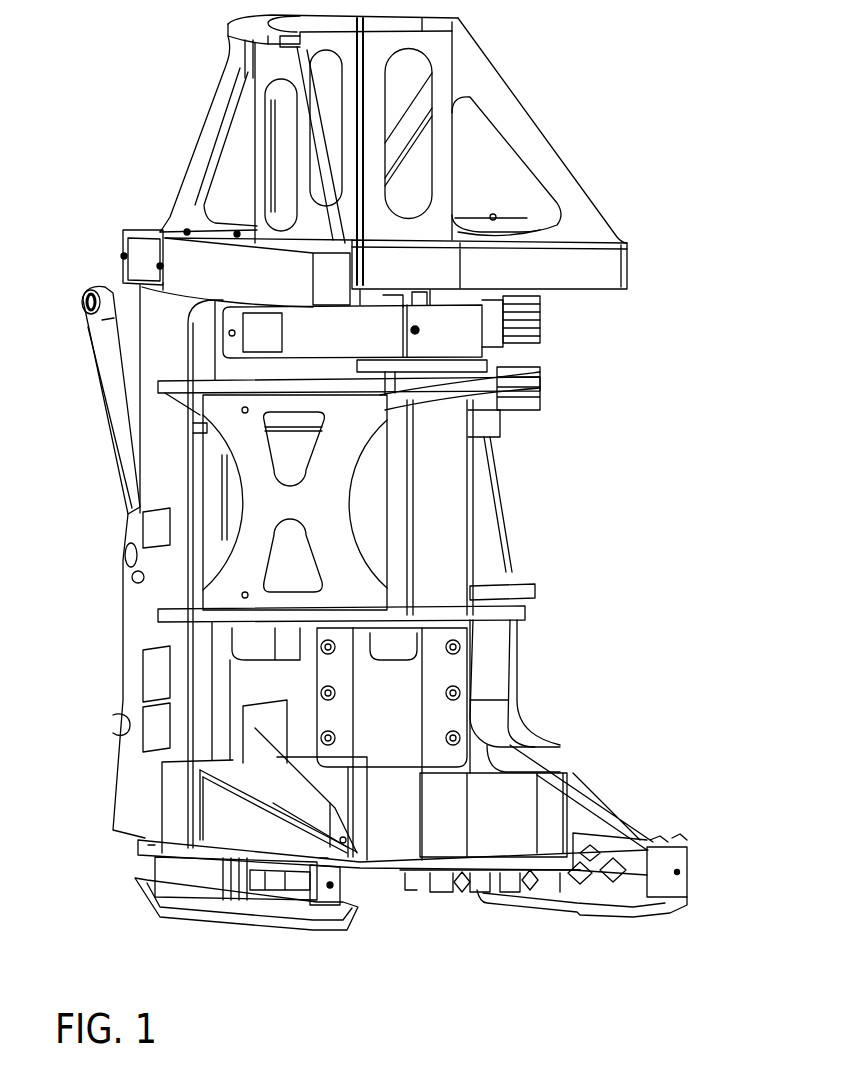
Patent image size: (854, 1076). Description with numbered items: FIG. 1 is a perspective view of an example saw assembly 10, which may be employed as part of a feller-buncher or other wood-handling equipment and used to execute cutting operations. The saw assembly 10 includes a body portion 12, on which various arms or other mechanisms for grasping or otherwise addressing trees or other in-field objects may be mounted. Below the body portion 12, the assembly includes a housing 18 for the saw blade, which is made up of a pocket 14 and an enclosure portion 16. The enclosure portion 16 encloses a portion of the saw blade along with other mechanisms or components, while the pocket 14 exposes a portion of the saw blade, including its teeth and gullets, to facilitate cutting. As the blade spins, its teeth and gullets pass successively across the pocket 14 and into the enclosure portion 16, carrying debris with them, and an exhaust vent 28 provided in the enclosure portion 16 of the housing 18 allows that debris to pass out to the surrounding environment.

The saw assembly 10 is at (81, 189).
The body portion 12 is at (575, 405).
The pocket 14 is at (505, 835).
The enclosure portion 16 is at (162, 868).
The housing 18 is at (683, 828).
The exhaust vent 28 is at (207, 930).